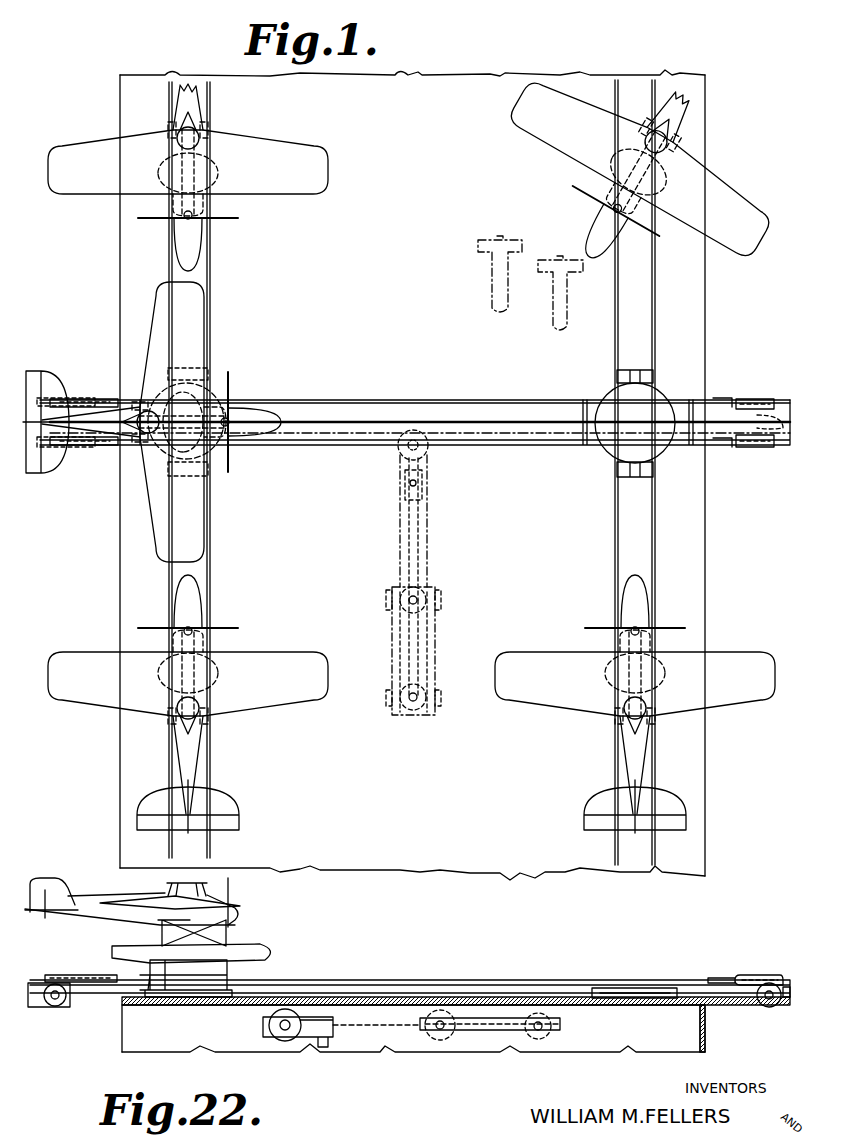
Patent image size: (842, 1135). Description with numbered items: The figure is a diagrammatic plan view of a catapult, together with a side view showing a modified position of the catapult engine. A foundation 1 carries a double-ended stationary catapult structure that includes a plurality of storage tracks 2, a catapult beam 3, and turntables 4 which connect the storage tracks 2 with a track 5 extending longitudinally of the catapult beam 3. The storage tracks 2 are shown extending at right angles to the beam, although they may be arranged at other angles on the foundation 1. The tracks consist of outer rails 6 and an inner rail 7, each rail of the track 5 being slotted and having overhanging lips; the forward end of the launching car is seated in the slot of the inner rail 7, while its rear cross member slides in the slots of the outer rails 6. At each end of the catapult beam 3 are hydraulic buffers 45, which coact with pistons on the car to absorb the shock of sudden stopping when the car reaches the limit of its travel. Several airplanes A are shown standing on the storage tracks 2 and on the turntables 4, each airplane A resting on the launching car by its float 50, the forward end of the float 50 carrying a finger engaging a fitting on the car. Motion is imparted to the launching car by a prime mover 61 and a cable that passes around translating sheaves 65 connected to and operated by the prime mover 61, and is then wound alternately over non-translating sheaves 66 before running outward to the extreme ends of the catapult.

In FIG. 1, the foundation 1 is at (412, 475).
In FIG. 1, the storage tracks 2 is at (205, 270).
In FIG. 1, the catapult beam 3 is at (300, 413).
In FIG. 1, the turntables 4 is at (213, 397).
In FIG. 1, the track 5 is at (447, 410).
In FIG. 1, the outer rails 6 is at (380, 402).
In FIG. 1, the inner rail 7 is at (495, 422).
In FIG. 1, the hydraulic buffers 45 is at (98, 399).
In FIG. 22, the hydraulic buffers 45 is at (102, 975).
In FIG. 22, the float 50 is at (270, 955).
In FIG. 1, the prime mover 61 is at (435, 590).
In FIG. 22, the prime mover 61 is at (364, 1035).
In FIG. 1, the translating sheaves 65 is at (394, 597).
In FIG. 1, the non-translating sheaves 66 is at (428, 448).
In FIG. 1, the airplane A is at (532, 660).
In FIG. 22, the airplane A is at (100, 904).